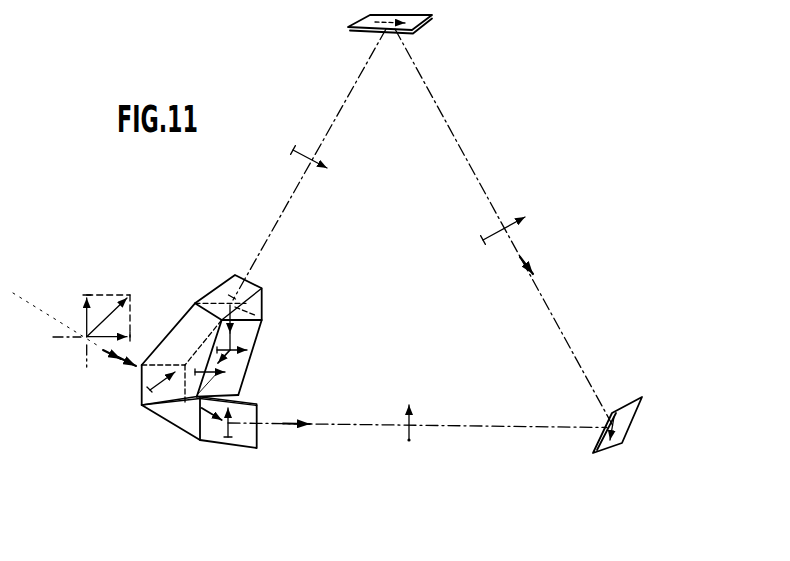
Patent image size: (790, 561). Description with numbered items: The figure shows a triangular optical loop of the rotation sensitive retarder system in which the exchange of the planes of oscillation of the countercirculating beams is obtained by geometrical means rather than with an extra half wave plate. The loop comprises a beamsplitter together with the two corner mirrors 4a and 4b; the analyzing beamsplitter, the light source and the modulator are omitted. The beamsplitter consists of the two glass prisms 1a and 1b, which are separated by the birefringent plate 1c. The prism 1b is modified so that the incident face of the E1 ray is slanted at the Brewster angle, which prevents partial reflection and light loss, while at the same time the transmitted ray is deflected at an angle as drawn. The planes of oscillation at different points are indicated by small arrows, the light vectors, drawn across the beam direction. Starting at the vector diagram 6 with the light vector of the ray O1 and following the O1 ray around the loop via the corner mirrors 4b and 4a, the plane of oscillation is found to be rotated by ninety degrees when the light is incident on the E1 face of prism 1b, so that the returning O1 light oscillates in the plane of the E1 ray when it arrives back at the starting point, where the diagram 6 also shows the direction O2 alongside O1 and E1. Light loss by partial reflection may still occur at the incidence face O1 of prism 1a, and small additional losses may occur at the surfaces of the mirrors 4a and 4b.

The glass prism 1a is at (199, 423).
The glass prism 1b is at (202, 333).
The birefringent plate 1c is at (142, 405).
The corner mirror 4a is at (633, 425).
The corner mirror 4b is at (403, 36).
The vector diagram 6 is at (74, 332).
The O1 ray O1 is at (183, 361).
The O2 ray O2 is at (148, 294).
The E1 ray E1 is at (199, 275).